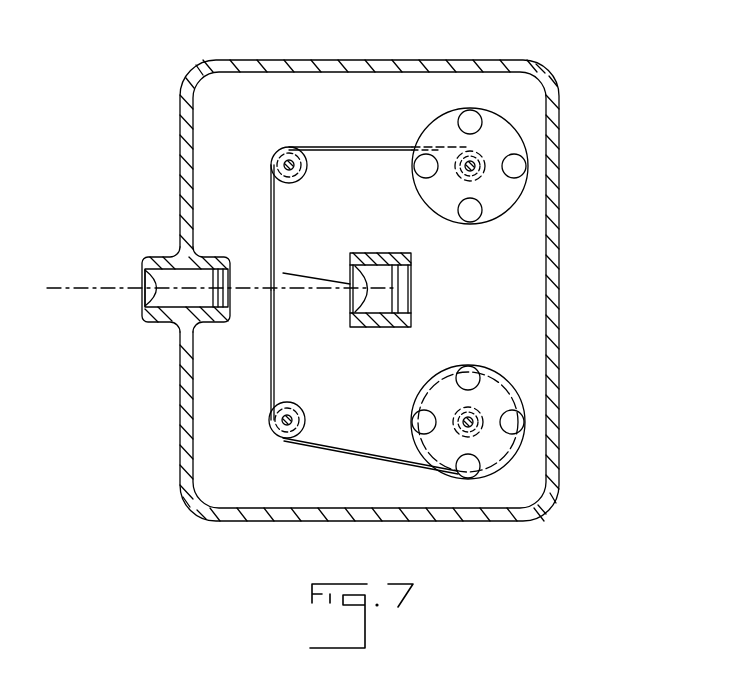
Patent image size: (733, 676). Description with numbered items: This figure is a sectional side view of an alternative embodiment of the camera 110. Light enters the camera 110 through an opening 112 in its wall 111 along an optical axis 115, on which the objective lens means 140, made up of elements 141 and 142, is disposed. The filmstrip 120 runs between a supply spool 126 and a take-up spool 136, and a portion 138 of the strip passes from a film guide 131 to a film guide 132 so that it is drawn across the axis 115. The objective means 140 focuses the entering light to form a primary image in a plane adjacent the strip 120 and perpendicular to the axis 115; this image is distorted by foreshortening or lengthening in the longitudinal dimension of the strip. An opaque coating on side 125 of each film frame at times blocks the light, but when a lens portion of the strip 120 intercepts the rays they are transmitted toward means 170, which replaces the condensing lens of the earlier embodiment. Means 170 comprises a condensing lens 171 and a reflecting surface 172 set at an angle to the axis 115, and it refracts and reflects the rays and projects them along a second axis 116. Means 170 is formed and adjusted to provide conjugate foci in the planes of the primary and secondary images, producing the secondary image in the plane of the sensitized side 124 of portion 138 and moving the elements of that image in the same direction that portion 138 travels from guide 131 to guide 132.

The camera 110 is at (179, 418).
The housing wall 111 is at (436, 60).
The opening 112 is at (172, 310).
The optical axis 115 is at (62, 287).
The axis 116 is at (285, 272).
The filmstrip 120 is at (268, 367).
The sensitized side 124 is at (275, 217).
The side 125 is at (270, 253).
The supply spool 126 is at (518, 407).
The film guide 131 is at (276, 438).
The film guide 132 is at (287, 147).
The take-up spool 136 is at (514, 140).
The portion of strip 138 is at (272, 215).
The objective lens means 140 is at (147, 273).
The lens element 141 is at (150, 300).
The lens element 142 is at (212, 268).
The condensing and reflecting means 170 is at (402, 290).
The condensing lens 171 is at (352, 302).
The reflecting surface 172 is at (367, 327).